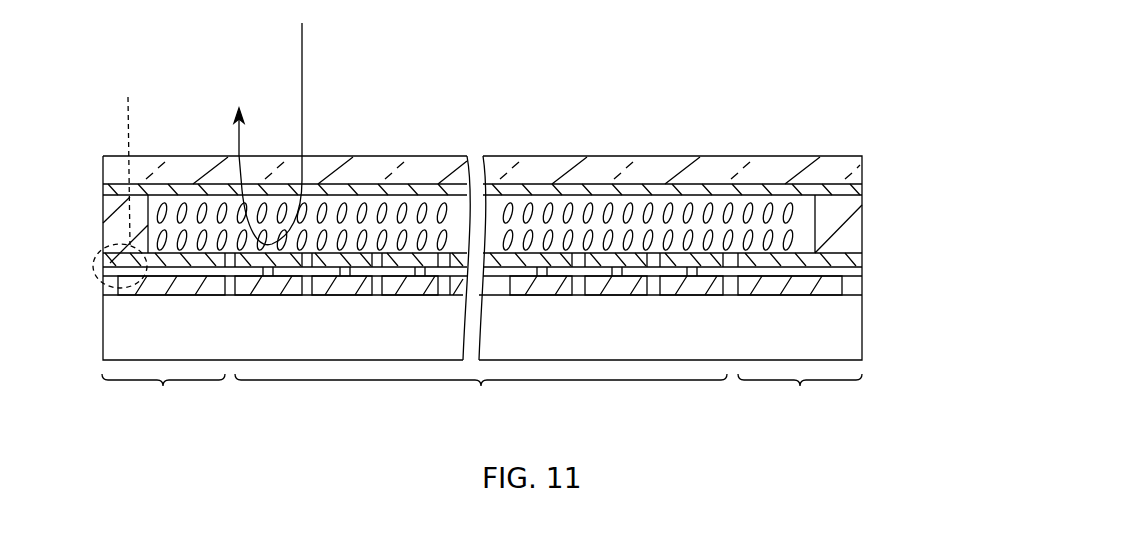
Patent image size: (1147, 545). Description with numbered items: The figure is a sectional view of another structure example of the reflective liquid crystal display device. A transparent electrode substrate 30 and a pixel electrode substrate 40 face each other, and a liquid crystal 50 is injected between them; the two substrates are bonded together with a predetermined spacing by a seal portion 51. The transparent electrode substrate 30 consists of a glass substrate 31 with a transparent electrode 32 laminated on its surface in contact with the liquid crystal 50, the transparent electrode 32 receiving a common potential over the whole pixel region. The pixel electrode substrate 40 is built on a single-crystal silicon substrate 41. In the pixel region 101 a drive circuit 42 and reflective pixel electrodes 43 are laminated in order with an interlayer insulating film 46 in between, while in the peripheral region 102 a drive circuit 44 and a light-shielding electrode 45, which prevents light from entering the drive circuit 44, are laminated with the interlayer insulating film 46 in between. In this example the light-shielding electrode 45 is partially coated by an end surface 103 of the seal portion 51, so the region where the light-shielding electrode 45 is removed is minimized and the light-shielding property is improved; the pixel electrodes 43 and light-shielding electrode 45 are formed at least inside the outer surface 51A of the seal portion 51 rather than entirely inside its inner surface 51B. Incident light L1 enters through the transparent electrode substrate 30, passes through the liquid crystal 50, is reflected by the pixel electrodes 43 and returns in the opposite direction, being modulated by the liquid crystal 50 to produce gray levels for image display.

The transparent electrode substrate 30 is at (536, 175).
The glass substrate 31 is at (862, 166).
The transparent electrode 32 is at (862, 190).
The pixel electrode substrate 40 is at (536, 290).
The single-crystal silicon substrate 41 is at (512, 335).
The drive circuit 42 is at (680, 287).
The reflective pixel electrode 43 is at (703, 270).
The drive circuit 44 is at (805, 279).
The light-shielding electrode 45 is at (805, 250).
The interlayer insulating film 46 is at (800, 266).
The liquid crystal 50 is at (654, 206).
The seal portion 51 is at (826, 200).
The outer surface of the seal portion 51A is at (102, 201).
The inner surface of the seal portion 51B is at (151, 201).
The pixel region 101 is at (481, 396).
The peripheral region 102 is at (482, 396).
The end surface of the seal portion 103 is at (125, 178).
The incident light L1 is at (303, 66).